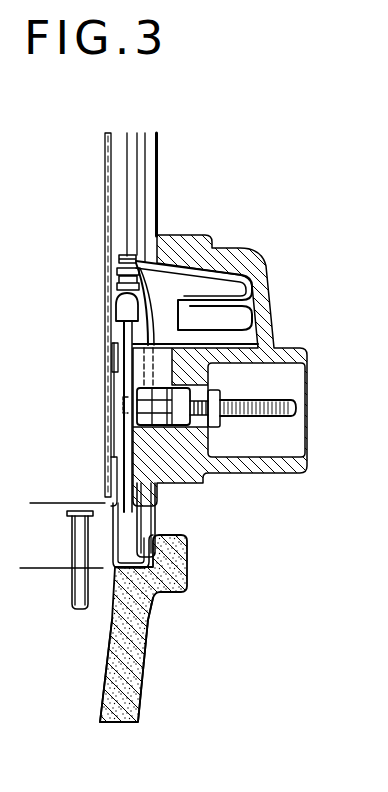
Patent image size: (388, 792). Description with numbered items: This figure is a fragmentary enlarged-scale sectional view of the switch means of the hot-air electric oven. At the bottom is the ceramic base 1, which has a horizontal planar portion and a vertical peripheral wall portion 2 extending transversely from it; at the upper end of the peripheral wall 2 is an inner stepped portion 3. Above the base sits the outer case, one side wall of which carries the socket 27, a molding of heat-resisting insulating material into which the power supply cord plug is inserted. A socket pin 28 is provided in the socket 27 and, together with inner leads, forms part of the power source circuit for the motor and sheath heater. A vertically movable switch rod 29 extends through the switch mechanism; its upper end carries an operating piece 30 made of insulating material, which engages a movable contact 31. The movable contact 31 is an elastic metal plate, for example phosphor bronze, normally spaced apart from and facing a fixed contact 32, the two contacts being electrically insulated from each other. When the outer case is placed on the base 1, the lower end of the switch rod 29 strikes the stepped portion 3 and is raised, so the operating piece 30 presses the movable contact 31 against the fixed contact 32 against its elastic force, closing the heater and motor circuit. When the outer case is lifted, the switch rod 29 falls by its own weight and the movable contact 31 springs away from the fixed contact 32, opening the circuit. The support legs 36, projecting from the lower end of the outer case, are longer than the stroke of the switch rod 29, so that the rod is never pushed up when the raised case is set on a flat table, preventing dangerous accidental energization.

The base 1 is at (118, 693).
The peripheral wall portion 2 is at (186, 556).
The inner stepped portion 3 is at (151, 600).
The socket 27 is at (268, 274).
The socket pin 28 is at (298, 408).
The switch rod 29 is at (128, 386).
The operating piece 30 is at (122, 312).
The movable contact 31 is at (118, 279).
The fixed contact 32 is at (120, 258).
The support legs 36 is at (76, 591).